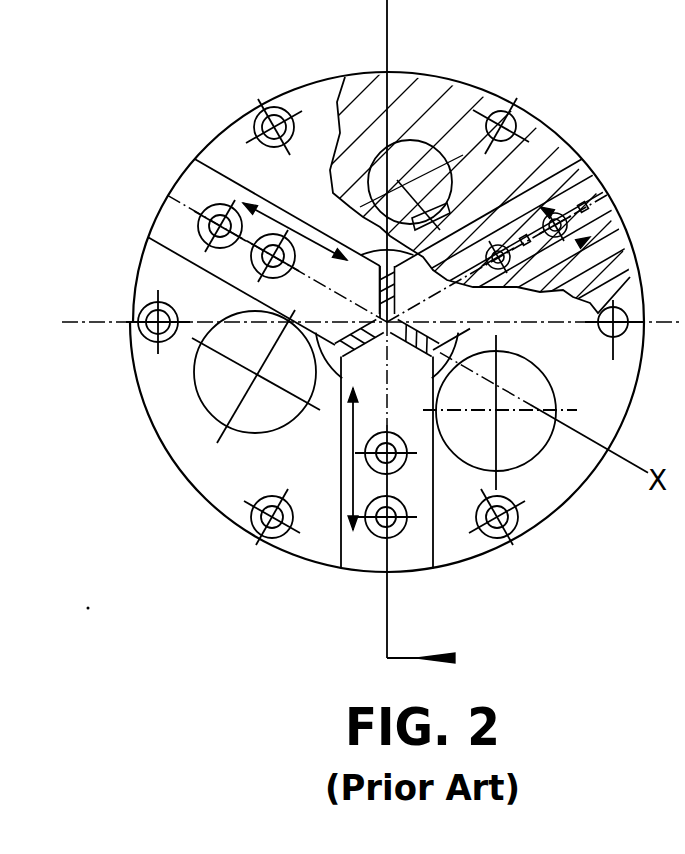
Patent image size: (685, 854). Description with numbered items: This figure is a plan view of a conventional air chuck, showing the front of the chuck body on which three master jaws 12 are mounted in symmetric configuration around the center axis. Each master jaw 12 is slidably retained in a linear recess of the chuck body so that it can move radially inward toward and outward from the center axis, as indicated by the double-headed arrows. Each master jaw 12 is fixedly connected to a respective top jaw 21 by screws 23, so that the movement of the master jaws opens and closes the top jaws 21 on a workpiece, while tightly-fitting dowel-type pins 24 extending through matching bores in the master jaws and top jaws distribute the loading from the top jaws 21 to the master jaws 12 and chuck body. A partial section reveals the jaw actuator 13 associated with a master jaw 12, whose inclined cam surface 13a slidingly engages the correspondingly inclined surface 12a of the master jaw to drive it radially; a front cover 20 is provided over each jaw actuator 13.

The master jaw 12 is at (562, 156).
The inclined surface 12a is at (449, 208).
The jaw actuator 13 is at (430, 125).
The inclined cam surface 13a is at (403, 183).
The front cover 20 is at (281, 420).
The top jaw 21 is at (193, 186).
The screw 23 is at (500, 283).
The dowel-type pin 24 is at (462, 272).